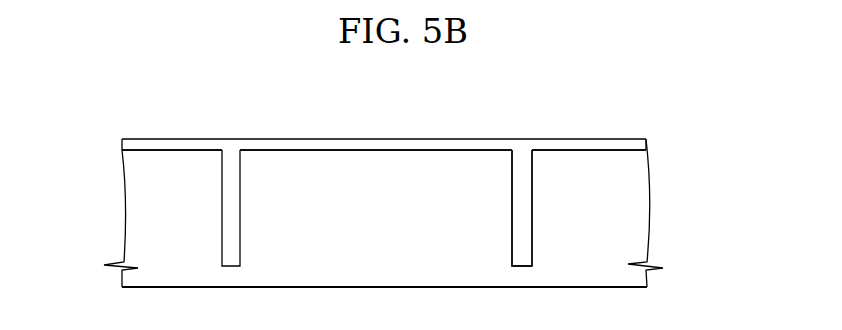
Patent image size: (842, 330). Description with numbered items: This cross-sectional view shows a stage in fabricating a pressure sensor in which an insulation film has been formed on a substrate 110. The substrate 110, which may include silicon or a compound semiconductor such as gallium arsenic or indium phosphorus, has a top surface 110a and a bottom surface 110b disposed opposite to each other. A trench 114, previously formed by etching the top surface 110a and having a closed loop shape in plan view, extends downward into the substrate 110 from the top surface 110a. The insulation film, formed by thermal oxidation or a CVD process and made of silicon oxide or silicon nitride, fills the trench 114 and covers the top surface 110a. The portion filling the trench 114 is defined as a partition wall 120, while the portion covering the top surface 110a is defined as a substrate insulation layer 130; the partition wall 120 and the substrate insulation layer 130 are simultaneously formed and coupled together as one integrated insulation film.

The substrate 110 is at (636, 243).
The top surface 110a is at (140, 149).
The bottom surface 110b is at (140, 287).
The trench 114 is at (239, 172).
The partition wall 120 is at (521, 208).
The substrate insulation layer 130 is at (636, 146).